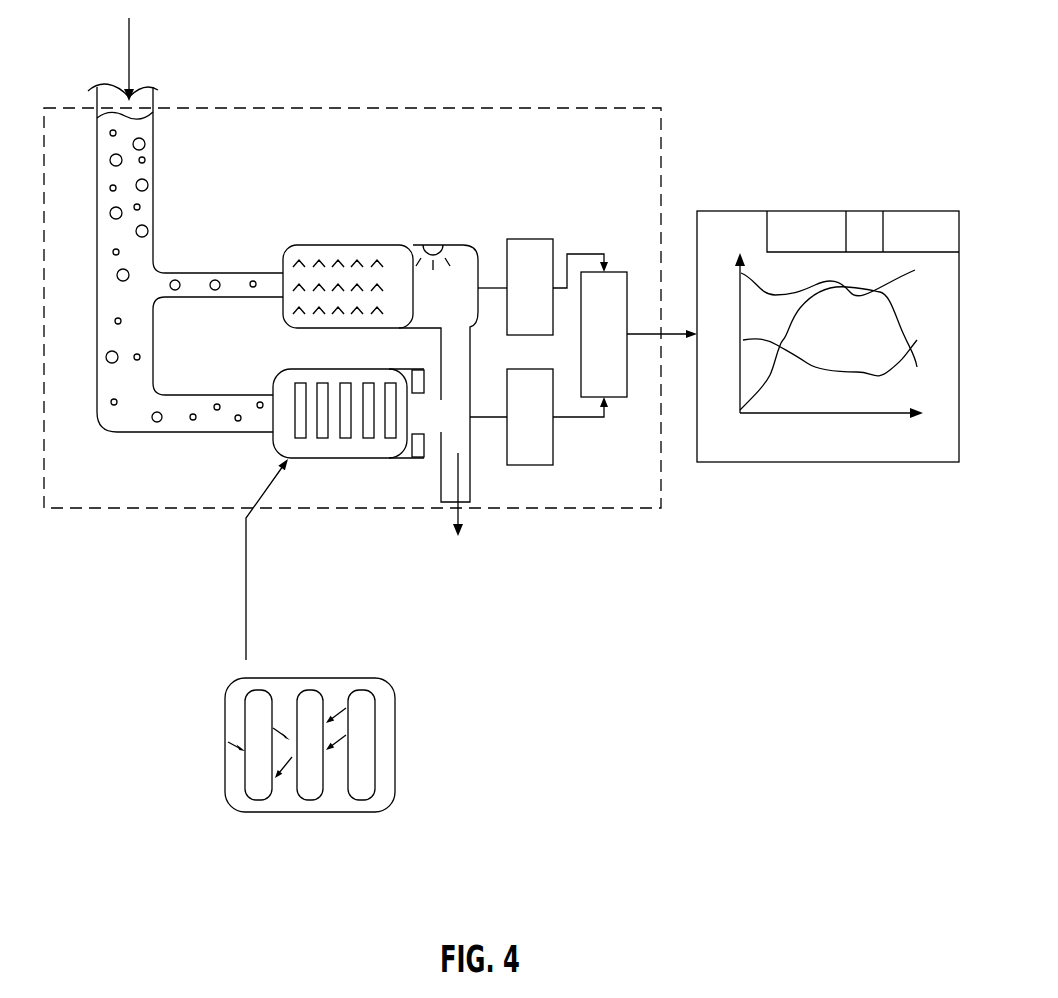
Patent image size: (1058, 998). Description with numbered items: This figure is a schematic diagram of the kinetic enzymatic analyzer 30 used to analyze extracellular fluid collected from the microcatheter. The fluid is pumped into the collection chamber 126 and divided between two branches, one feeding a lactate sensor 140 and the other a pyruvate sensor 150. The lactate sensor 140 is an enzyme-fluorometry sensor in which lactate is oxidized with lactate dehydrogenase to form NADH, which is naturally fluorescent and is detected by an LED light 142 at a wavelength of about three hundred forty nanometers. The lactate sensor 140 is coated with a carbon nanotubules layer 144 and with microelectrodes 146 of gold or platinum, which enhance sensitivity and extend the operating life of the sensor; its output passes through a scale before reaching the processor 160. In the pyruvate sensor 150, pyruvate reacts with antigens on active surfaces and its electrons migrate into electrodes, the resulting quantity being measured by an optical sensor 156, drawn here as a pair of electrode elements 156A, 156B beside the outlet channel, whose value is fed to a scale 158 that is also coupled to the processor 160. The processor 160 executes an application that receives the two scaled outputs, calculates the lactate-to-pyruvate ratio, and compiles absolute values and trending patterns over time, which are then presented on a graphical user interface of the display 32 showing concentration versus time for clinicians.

The kinetic enzymatic analyzer 30 is at (360, 66).
The display 32 is at (880, 211).
The collection chamber 126 is at (120, 432).
The lactate sensor 140 is at (380, 332).
The LED light 142 is at (436, 240).
The carbon nanotubules layer 144 is at (371, 318).
The microelectrodes 146 is at (318, 312).
The pyruvate sensor 150 is at (355, 454).
The optical sensor 156 is at (428, 455).
The first electrode 156A is at (412, 442).
The second electrode 156B is at (423, 372).
The scale 158 is at (553, 440).
The processor 160 is at (608, 266).